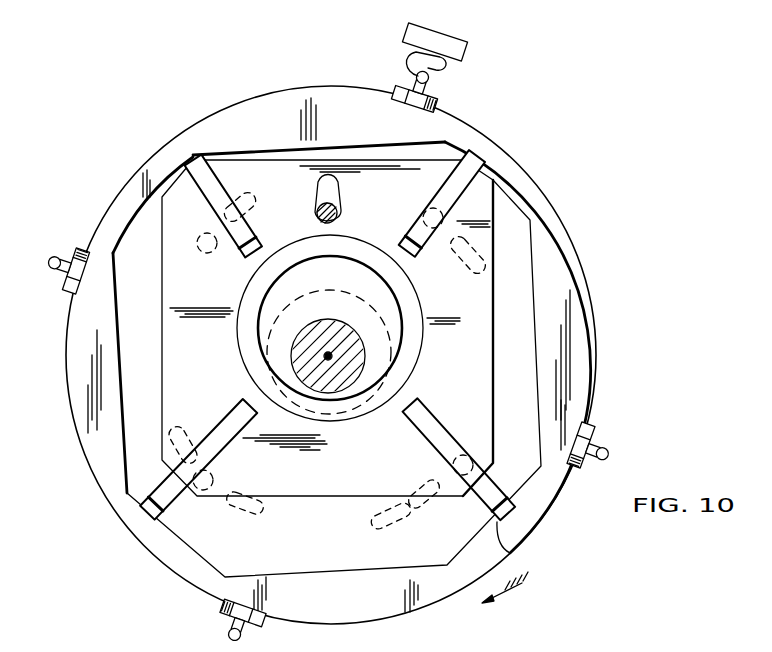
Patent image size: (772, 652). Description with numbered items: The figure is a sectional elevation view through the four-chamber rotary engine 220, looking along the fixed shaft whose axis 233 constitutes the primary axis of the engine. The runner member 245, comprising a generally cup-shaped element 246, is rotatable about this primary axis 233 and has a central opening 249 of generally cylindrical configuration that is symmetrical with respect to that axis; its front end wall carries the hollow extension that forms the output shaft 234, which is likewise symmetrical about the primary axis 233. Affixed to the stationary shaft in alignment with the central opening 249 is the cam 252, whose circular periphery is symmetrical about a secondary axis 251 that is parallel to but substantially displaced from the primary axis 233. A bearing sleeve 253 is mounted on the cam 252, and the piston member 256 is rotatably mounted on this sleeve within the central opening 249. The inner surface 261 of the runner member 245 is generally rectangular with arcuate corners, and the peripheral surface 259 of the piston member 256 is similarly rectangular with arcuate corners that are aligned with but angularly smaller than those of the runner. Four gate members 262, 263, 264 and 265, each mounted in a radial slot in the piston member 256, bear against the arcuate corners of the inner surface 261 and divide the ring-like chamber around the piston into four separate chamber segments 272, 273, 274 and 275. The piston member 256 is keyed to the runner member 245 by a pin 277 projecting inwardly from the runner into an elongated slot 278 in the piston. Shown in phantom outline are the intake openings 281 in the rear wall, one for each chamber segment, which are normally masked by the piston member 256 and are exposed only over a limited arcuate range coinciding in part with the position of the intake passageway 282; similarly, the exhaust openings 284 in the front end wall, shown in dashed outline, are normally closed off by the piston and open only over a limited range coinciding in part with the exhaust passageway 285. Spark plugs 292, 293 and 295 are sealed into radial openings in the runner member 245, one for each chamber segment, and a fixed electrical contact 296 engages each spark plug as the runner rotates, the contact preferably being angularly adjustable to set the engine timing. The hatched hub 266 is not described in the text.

The four-chamber rotary engine 220 is at (134, 128).
The primary axis 233 is at (330, 358).
The output shaft 234 is at (273, 318).
The runner member 245 is at (563, 223).
The cup-shaped element 246 is at (575, 311).
The central opening 249 is at (458, 535).
The secondary axis 251 is at (326, 326).
The cam 252 is at (390, 302).
The bearing sleeve 253 is at (410, 347).
The piston member 256 is at (350, 480).
The peripheral surface of piston member 259 is at (160, 280).
The inner surface of runner member 261 is at (120, 347).
The gate member 262 is at (205, 193).
The gate member 263 is at (460, 178).
The gate member 264 is at (510, 555).
The gate member 265 is at (170, 518).
The hub 266 is at (353, 372).
The chamber segment 272 is at (375, 152).
The chamber segment 273 is at (515, 368).
The chamber segment 274 is at (345, 555).
The chamber segment 275 is at (140, 382).
The pin 277 is at (337, 213).
The elongated slot 278 is at (318, 192).
The intake openings 281 is at (242, 203).
The intake passageway 282 is at (242, 510).
The exhaust openings 284 is at (420, 213).
The exhaust passageway 285 is at (388, 527).
The spark plug 292 is at (445, 106).
The spark plug 293 is at (595, 430).
The spark plug 295 is at (80, 247).
The fixed electrical contact 296 is at (410, 50).